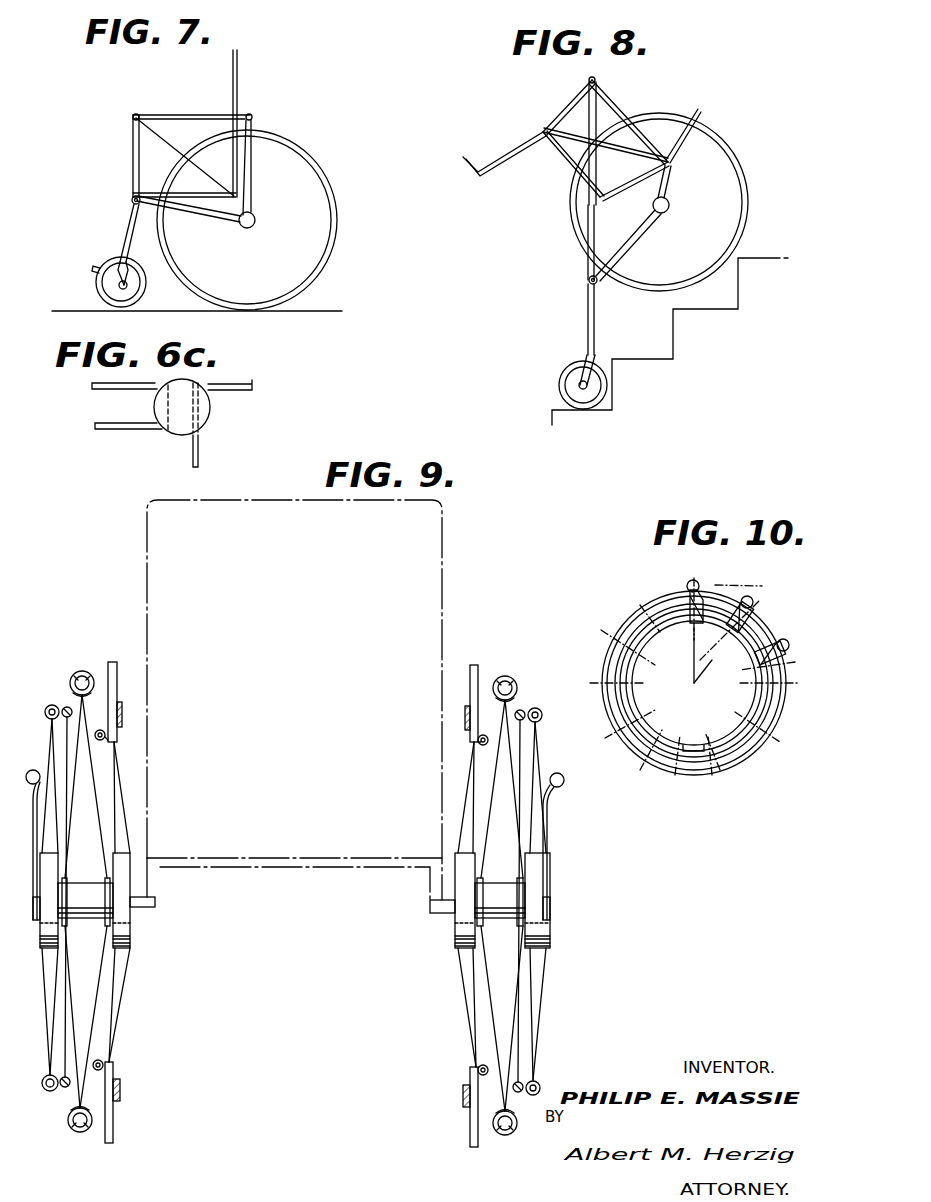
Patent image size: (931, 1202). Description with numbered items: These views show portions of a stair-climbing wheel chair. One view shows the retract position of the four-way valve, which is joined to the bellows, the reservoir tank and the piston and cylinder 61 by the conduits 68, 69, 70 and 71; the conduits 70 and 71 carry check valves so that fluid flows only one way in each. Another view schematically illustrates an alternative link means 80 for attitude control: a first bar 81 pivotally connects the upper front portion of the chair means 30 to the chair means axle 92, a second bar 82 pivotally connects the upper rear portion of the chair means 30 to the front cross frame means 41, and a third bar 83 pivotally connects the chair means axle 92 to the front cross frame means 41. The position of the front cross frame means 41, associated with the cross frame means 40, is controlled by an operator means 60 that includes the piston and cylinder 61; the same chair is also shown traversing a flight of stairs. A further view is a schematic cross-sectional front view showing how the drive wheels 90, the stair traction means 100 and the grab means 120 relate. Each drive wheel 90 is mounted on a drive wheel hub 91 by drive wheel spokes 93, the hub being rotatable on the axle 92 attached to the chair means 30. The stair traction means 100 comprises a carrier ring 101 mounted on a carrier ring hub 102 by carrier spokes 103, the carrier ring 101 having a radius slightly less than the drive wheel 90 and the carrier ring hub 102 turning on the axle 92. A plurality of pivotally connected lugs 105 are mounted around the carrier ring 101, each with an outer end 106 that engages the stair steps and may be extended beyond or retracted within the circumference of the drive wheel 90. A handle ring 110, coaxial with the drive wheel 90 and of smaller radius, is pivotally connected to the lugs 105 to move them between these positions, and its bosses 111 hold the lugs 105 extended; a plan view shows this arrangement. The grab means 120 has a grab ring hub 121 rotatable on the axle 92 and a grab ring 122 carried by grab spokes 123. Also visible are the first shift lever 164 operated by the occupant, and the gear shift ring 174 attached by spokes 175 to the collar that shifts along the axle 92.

In FIG. 7, the chair means 30 is at (212, 95).
In FIG. 8, the chair means 30 is at (655, 98).
In FIG. 7, the cross frame means 40 is at (115, 201).
In FIG. 8, the cross frame means 40 is at (567, 215).
In FIG. 7, the front cross frame means 41 is at (115, 233).
In FIG. 8, the front cross frame means 41 is at (580, 300).
In FIG. 7, the operator means 60 is at (118, 129).
In FIG. 8, the operator means 60 is at (552, 98).
In FIG. 7, the piston and cylinder 61 is at (132, 162).
In FIG. 8, the piston and cylinder 61 is at (587, 129).
In FIG. 6C, the conduit 68 is at (97, 393).
In FIG. 6C, the conduit 69 is at (200, 455).
In FIG. 6C, the conduit 70 is at (105, 433).
In FIG. 6C, the conduit 71 is at (247, 383).
In FIG. 7, the link means 80 is at (260, 104).
In FIG. 8, the link means 80 is at (727, 108).
In FIG. 7, the first bar 81 is at (170, 141).
In FIG. 8, the first bar 81 is at (640, 153).
In FIG. 7, the second bar 82 is at (253, 119).
In FIG. 8, the second bar 82 is at (667, 175).
In FIG. 7, the third bar 83 is at (203, 222).
In FIG. 8, the third bar 83 is at (643, 226).
In FIG. 7, the drive wheel 90 is at (325, 181).
In FIG. 8, the drive wheel 90 is at (738, 162).
In FIG. 9, the drive wheel 90 is at (85, 671).
In FIG. 10, the drive wheel 90 is at (655, 770).
In FIG. 9, the drive wheel hub 91 is at (90, 893).
In FIG. 7, the chair means axle 92 is at (256, 217).
In FIG. 8, the chair means axle 92 is at (670, 206).
In FIG. 9, the chair means axle 92 is at (148, 906).
In FIG. 9, the drive wheel spokes 93 is at (95, 815).
In FIG. 9, the stair traction means 100 is at (132, 979).
In FIG. 10, the stair traction means 100 is at (630, 608).
In FIG. 9, the carrier ring 101 is at (122, 718).
In FIG. 10, the carrier ring 101 is at (745, 745).
In FIG. 9, the carrier ring hub 102 is at (131, 942).
In FIG. 9, the carrier spokes 103 is at (122, 784).
In FIG. 9, the lugs 105 is at (130, 636).
In FIG. 10, the lugs 105 is at (690, 598).
In FIG. 10, the outer end 106 is at (699, 585).
In FIG. 9, the handle ring 110 is at (104, 1064).
In FIG. 10, the handle ring 110 is at (704, 760).
In FIG. 10, the bosses 111 is at (688, 635).
In FIG. 9, the grab means 120 is at (42, 1093).
In FIG. 9, the grab ring hub 121 is at (40, 962).
In FIG. 9, the grab ring 122 is at (54, 704).
In FIG. 9, the grab spokes 123 is at (542, 801).
In FIG. 9, the first shift lever 164 is at (40, 775).
In FIG. 9, the gear shift ring 174 is at (75, 1082).
In FIG. 9, the spokes 175 is at (66, 1028).